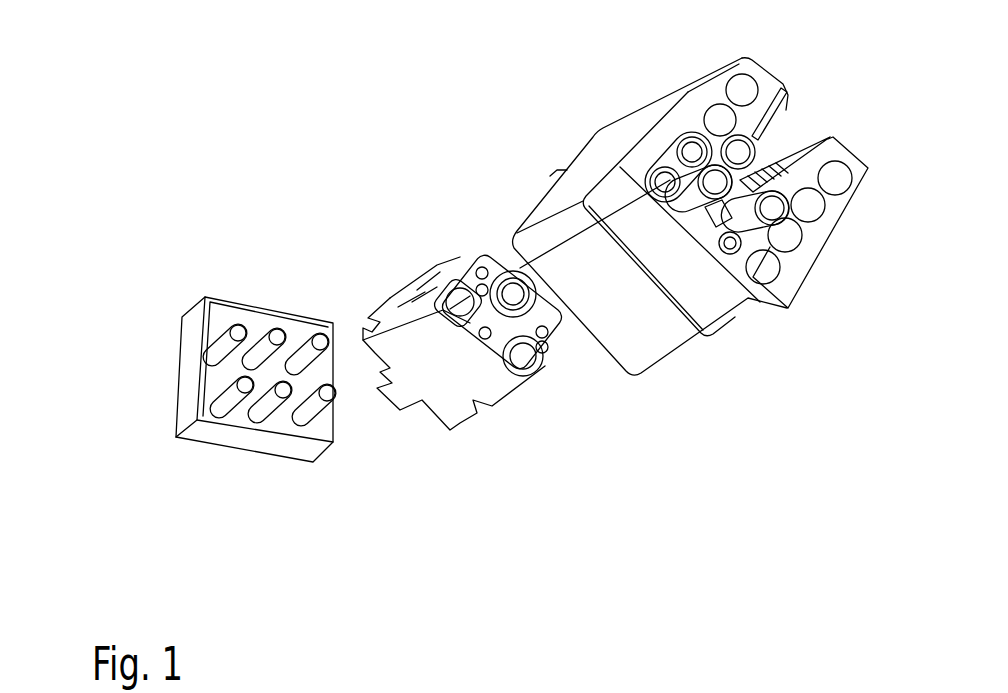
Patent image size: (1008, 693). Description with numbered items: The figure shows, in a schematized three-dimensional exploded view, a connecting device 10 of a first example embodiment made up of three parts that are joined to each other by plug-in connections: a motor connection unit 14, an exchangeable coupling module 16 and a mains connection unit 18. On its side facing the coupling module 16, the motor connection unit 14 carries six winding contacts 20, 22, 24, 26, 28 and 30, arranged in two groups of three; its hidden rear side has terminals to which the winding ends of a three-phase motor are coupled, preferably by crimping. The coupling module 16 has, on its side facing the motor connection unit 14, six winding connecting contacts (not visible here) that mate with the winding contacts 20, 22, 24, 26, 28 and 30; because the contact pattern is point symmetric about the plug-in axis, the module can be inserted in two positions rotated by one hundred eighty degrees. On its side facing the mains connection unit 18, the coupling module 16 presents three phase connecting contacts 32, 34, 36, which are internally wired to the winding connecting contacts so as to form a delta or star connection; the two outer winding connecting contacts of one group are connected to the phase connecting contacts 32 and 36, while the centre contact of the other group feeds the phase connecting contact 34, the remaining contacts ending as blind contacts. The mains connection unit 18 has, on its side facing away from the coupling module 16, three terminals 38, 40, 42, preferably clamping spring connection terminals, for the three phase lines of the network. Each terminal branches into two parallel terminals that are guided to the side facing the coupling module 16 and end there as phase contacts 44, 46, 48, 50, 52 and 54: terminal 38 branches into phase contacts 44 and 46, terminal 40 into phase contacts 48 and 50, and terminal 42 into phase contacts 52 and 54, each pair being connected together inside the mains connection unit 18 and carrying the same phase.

The connecting device 10 is at (336, 101).
The motor connection unit 14 is at (188, 414).
The exchangeable coupling module 16 is at (442, 372).
The mains connection unit 18 is at (642, 330).
The winding contact 20 is at (222, 338).
The winding contact 22 is at (263, 346).
The winding contact 24 is at (305, 350).
The winding contact 26 is at (232, 397).
The winding contact 28 is at (272, 400).
The winding contact 30 is at (315, 405).
The phase connecting contact 32 is at (460, 297).
The phase connecting contact 34 is at (515, 295).
The phase connecting contact 36 is at (530, 353).
The terminal 38 is at (717, 178).
The terminal 40 is at (738, 148).
The terminal 42 is at (775, 210).
The phase contact 44 is at (673, 176).
The phase contact 46 is at (698, 220).
The phase contact 48 is at (690, 152).
The phase contact 50 is at (742, 178).
The phase contact 52 is at (738, 245).
The phase contact 54 is at (744, 180).